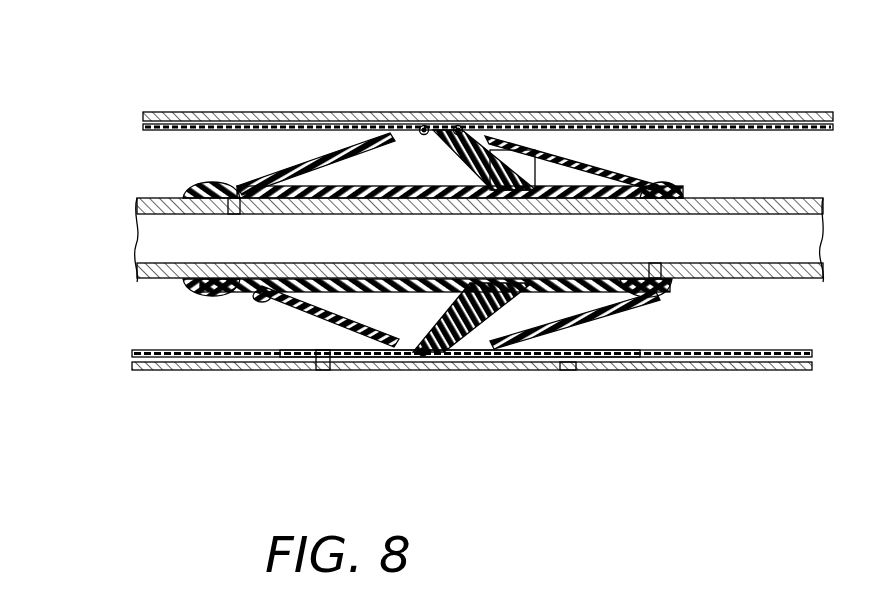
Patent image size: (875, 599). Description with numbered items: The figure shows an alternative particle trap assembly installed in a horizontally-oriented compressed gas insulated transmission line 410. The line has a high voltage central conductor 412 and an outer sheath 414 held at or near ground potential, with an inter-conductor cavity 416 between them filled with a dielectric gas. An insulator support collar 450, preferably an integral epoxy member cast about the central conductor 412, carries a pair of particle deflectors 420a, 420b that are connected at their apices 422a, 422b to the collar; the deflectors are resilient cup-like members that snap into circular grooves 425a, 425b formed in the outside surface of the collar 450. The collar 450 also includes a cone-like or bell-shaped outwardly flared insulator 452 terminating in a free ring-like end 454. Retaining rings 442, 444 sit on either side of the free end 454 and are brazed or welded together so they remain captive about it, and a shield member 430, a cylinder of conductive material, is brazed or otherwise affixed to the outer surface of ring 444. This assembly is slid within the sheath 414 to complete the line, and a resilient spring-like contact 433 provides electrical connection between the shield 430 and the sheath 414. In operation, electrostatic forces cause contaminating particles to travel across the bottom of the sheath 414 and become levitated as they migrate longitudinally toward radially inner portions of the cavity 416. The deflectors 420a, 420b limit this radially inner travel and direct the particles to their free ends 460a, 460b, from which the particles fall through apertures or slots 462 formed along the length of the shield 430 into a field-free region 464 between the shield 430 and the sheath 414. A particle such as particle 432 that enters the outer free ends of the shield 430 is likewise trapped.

The gas insulated transmission line 410 is at (690, 380).
The central conductor 412 is at (748, 247).
The outer sheath 414 is at (808, 117).
The inter-conductor cavity 416 is at (687, 145).
The particle deflector 420a is at (341, 148).
The particle deflector 420b is at (541, 150).
The apex 422a is at (237, 190).
The apex 422b is at (652, 191).
The circular groove 425a is at (235, 200).
The circular groove 425b is at (655, 285).
The shield member 430 is at (652, 353).
The particle 432 is at (323, 362).
The spring-like contact 433 is at (421, 355).
The retaining ring 442 is at (425, 125).
The retaining ring 444 is at (457, 125).
The insulator support collar 450 is at (264, 300).
The outwardly flared insulator 452 is at (532, 168).
The free ring-like end 454 is at (437, 136).
The free end 460a is at (390, 340).
The free end 460b is at (496, 345).
The apertures or slots 462 is at (327, 354).
The field-free region 464 is at (568, 366).